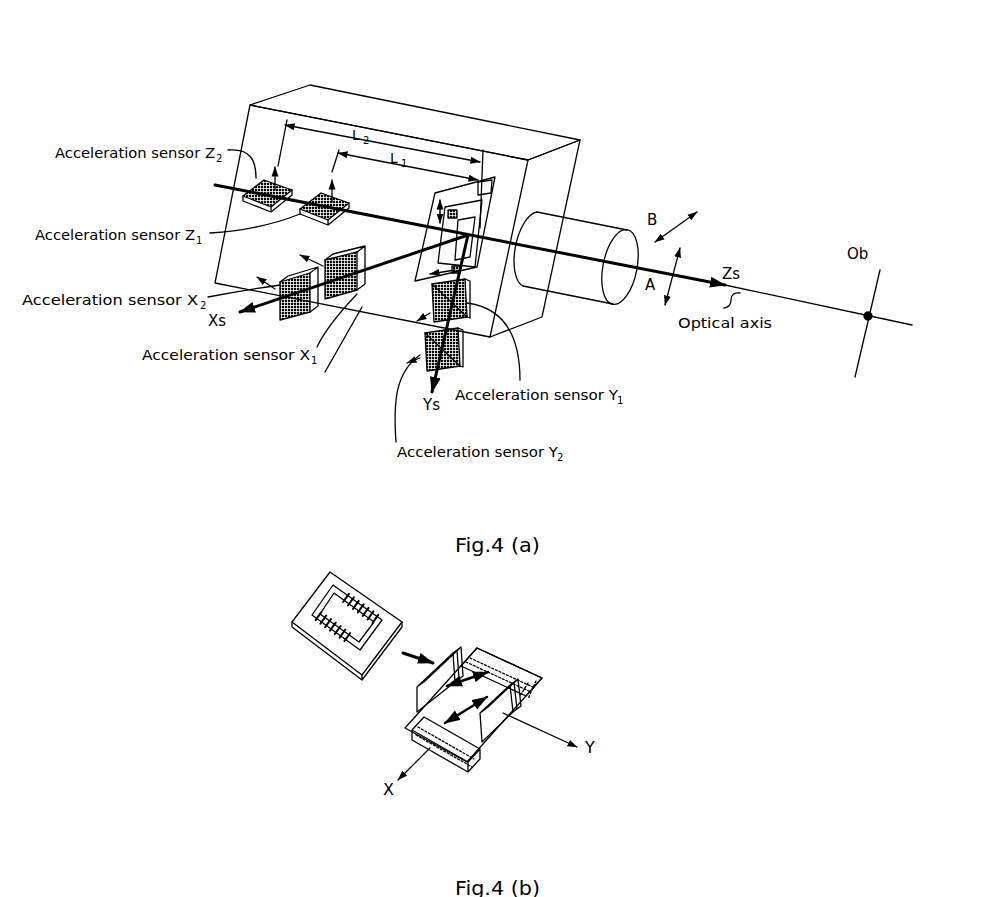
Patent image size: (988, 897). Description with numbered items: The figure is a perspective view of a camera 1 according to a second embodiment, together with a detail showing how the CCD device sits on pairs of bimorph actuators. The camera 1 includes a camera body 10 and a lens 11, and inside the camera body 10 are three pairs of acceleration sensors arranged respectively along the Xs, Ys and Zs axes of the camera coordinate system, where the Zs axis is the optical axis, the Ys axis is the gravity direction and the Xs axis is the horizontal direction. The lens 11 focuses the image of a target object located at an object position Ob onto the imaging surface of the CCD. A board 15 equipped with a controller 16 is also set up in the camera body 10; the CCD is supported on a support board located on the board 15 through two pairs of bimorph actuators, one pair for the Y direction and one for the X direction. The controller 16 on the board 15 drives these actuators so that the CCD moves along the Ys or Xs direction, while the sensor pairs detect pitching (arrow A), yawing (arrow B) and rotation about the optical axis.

The camera 1 is at (553, 68).
The camera body 10 is at (540, 140).
The lens 11 is at (575, 235).
The board 15 is at (470, 210).
The controller 16 is at (493, 188).